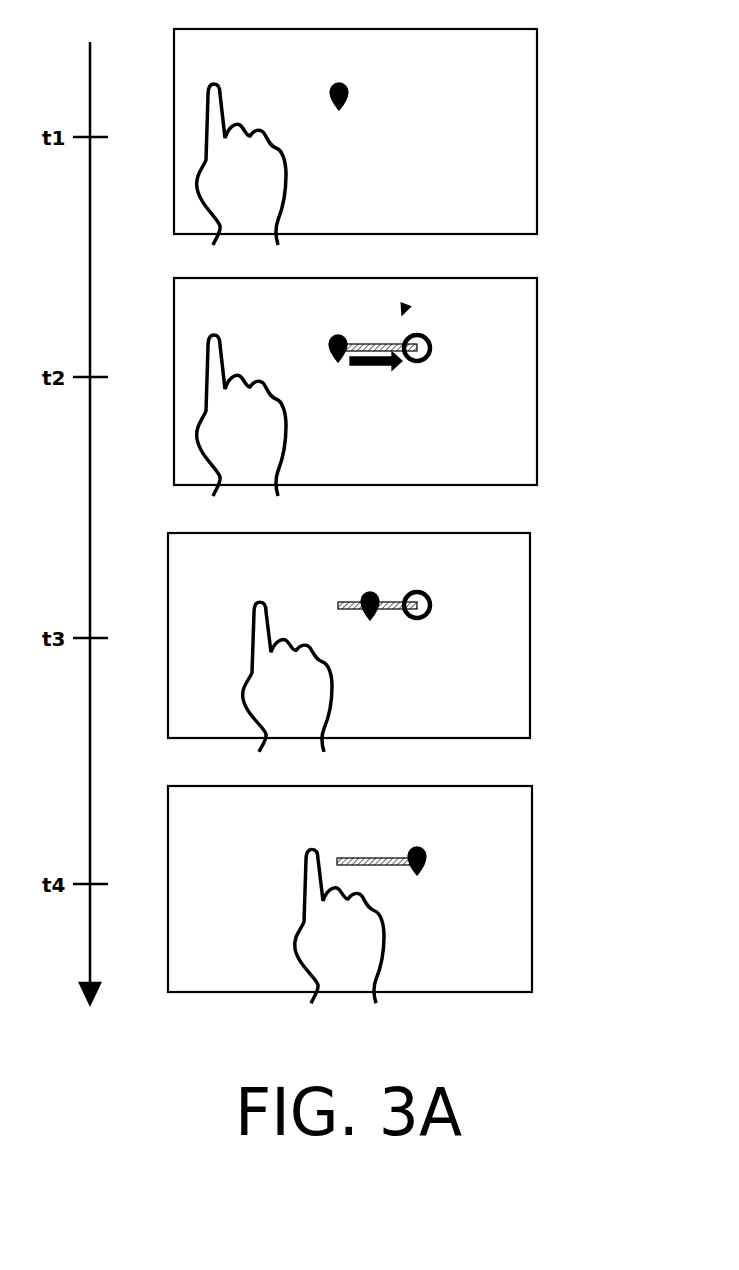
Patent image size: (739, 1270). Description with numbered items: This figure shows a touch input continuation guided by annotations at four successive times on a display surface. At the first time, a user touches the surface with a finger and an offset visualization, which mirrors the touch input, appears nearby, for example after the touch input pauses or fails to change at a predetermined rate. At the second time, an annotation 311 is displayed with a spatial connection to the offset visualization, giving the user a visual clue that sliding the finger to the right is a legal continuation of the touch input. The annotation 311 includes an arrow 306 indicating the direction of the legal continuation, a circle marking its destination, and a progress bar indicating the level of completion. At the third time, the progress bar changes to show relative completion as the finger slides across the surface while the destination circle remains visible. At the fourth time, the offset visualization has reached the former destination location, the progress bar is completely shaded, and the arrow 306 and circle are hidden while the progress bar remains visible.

The arrow 306 is at (373, 353).
The annotation 311 is at (406, 305).